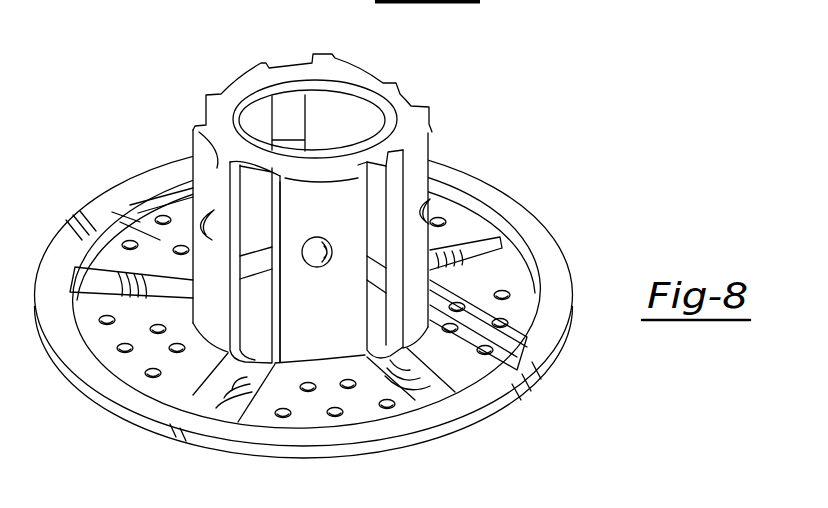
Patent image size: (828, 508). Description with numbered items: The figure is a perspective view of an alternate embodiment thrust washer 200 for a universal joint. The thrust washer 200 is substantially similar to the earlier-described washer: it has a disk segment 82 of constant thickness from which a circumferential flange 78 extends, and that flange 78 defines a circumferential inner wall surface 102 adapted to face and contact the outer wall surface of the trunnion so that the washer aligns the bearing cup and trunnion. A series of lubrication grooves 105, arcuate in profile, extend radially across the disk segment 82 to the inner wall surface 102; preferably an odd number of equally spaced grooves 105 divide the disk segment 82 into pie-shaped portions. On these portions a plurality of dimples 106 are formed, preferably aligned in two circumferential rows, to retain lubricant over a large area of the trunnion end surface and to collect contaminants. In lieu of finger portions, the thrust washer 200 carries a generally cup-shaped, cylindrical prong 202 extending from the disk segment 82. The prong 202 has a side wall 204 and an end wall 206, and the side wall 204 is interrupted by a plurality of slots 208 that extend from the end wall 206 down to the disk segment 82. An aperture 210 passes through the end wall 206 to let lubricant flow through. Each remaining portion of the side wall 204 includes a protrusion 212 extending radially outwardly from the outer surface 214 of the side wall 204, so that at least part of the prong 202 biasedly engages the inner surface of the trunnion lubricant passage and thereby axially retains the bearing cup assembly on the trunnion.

The circumferential flange 78 is at (562, 252).
The disk segment 82 is at (171, 390).
The circumferential inner wall surface 102 is at (470, 208).
The lubrication grooves 105 is at (497, 245).
The dimples 106 is at (386, 402).
The thrust washer 200 is at (107, 97).
The prong 202 is at (191, 184).
The side wall 204 is at (230, 323).
The end wall 206 is at (242, 158).
The slots 208 is at (268, 307).
The aperture 210 is at (340, 88).
The protrusion 212 is at (314, 247).
The outer surface 214 is at (428, 163).